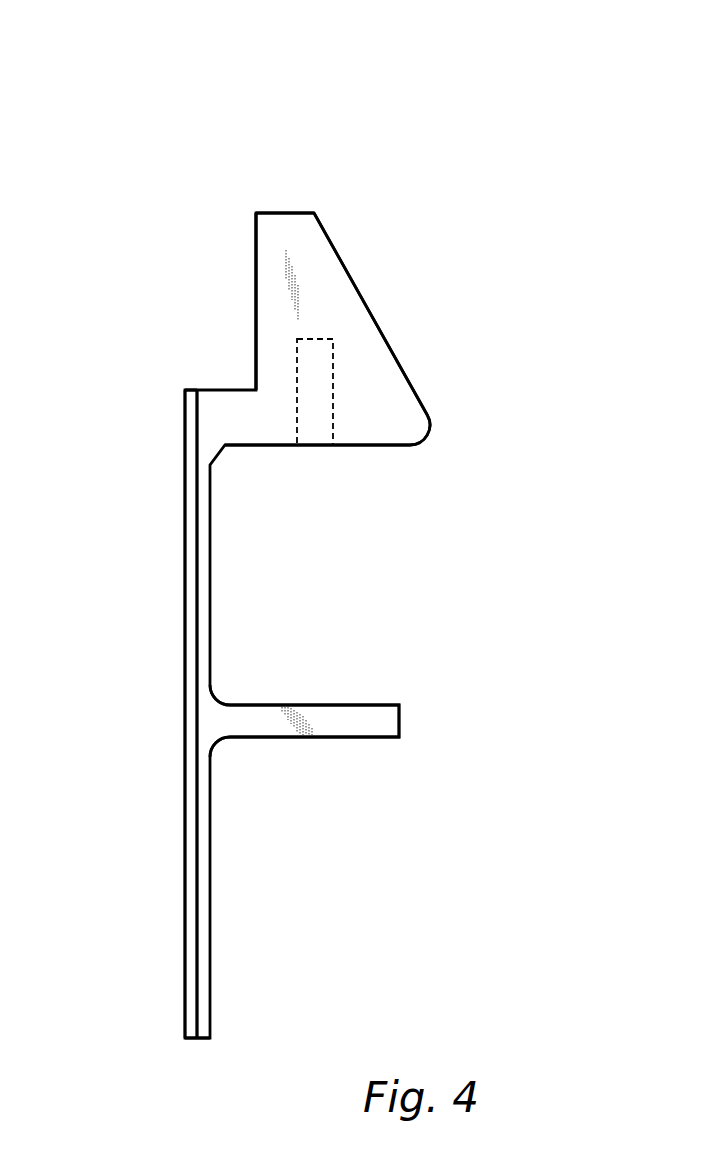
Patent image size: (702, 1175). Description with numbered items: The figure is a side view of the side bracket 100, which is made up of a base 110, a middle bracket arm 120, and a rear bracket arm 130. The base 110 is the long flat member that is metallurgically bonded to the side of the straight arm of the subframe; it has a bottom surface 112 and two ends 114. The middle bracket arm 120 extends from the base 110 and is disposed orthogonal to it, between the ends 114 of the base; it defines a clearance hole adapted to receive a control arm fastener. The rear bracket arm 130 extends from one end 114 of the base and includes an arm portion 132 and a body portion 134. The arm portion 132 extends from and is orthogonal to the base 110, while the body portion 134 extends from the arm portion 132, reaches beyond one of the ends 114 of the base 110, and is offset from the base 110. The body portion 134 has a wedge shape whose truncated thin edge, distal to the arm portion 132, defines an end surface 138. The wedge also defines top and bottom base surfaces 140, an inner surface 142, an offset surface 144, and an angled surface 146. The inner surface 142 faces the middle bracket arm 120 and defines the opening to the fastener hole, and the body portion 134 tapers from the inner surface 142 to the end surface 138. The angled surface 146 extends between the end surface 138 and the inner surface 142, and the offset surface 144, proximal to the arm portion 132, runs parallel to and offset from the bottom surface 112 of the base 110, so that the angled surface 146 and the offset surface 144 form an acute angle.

The side bracket 100 is at (372, 94).
The base 110 is at (185, 640).
The bottom surface 112 is at (185, 864).
The ends 114 is at (190, 388).
The middle bracket arm 120 is at (349, 705).
The rear bracket arm 130 is at (434, 220).
The arm portion 132 is at (247, 420).
The body portion 134 is at (425, 438).
The end surface 138 is at (285, 212).
The base surfaces 140 is at (383, 393).
The inner surface 142 is at (352, 445).
The offset surface 144 is at (255, 275).
The angled surface 146 is at (370, 312).